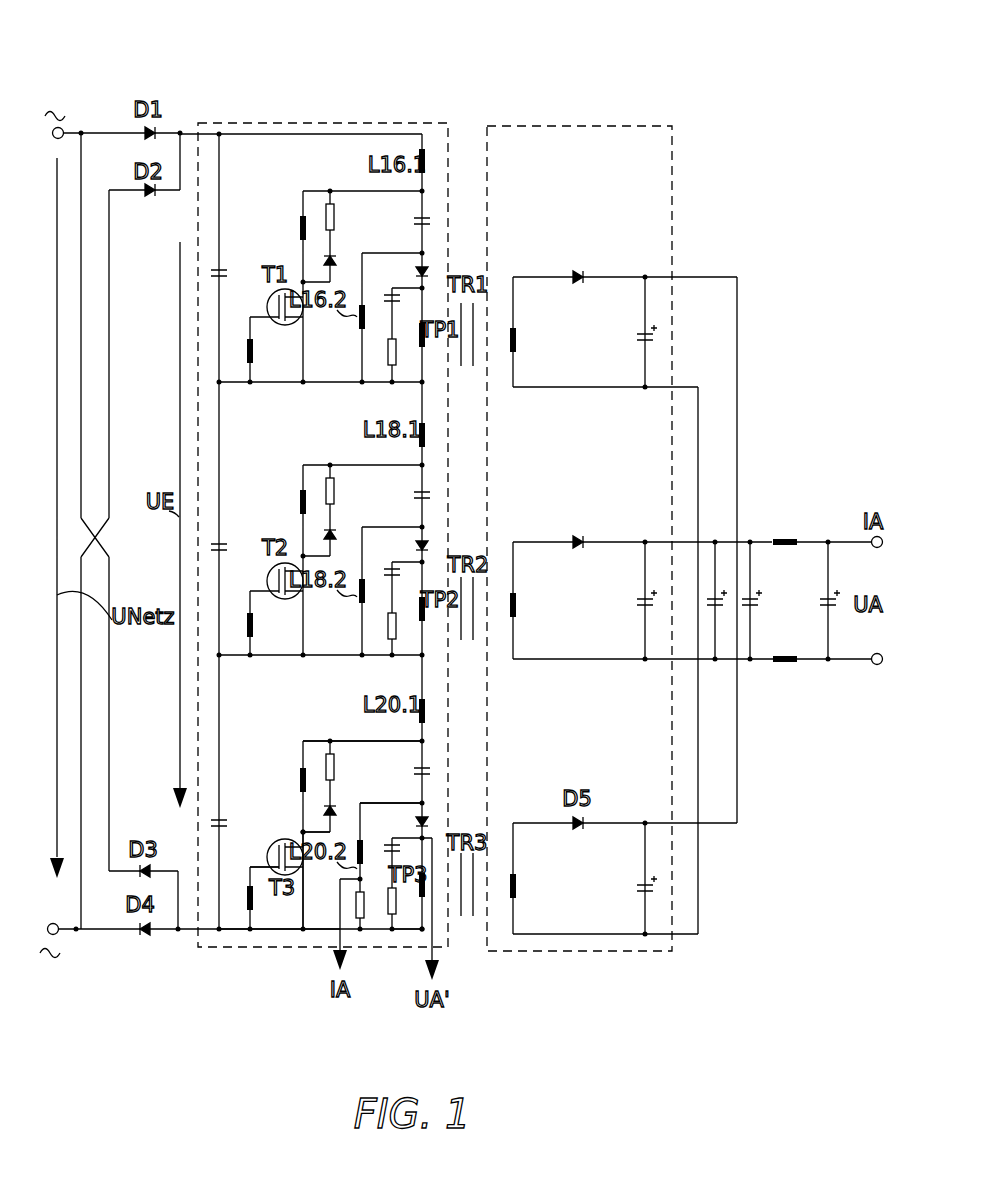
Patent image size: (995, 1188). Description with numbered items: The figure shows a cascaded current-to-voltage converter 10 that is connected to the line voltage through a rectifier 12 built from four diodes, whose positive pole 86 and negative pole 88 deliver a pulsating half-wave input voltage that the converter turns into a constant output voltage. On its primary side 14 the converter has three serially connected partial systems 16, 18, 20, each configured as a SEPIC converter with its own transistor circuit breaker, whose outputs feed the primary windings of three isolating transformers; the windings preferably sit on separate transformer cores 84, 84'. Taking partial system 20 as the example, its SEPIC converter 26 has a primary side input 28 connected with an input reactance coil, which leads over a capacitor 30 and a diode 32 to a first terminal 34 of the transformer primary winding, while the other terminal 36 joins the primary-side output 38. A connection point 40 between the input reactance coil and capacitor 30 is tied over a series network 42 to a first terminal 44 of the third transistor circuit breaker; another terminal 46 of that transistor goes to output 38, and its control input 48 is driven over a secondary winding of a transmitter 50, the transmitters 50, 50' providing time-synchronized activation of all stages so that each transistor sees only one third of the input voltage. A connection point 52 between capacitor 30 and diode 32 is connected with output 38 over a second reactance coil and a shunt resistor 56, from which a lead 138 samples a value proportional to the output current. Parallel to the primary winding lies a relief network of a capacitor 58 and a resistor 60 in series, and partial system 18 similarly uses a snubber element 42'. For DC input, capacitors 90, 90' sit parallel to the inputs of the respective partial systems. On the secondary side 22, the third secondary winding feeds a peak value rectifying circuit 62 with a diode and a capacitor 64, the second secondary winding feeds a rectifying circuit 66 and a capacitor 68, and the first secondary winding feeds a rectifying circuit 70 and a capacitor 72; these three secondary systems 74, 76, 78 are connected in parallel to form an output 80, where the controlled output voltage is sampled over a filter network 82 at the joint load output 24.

The current-to-voltage converter 10 is at (772, 202).
The rectifier 12 is at (109, 148).
The primary side 14 is at (305, 113).
The partial system 16 is at (231, 182).
The partial system 18 is at (233, 427).
The partial system 20 is at (231, 692).
The secondary side 22 is at (563, 116).
The joint load output 24 is at (828, 513).
The SEPIC converter 26 is at (271, 936).
The primary side input 28 is at (216, 936).
The capacitor 30 is at (413, 770).
The diode 32 is at (428, 823).
The first terminal 34 is at (396, 842).
The another terminal 36 is at (418, 935).
The primary-side output 38 is at (305, 936).
The connection point 40 is at (425, 742).
The series network 42 is at (319, 734).
The snubber element 42' is at (320, 458).
The first terminal 44 is at (302, 833).
The another terminal 46 is at (305, 882).
The control input 48 is at (251, 867).
The transmitter 50 is at (263, 898).
The transmitter 50' is at (264, 625).
The connection point 52 is at (425, 803).
The resistor 56 is at (356, 903).
The capacitor 58 is at (412, 843).
The resistor 60 is at (419, 934).
The peak value rectifying circuit 62 is at (552, 937).
The capacitor 64 is at (636, 888).
The rectifying circuit 66 is at (567, 661).
The capacitor 68 is at (632, 595).
The rectifying circuit 70 is at (565, 393).
The capacitor 72 is at (556, 335).
The secondary system 74 is at (687, 258).
The secondary system 76 is at (683, 490).
The secondary system 78 is at (687, 795).
The output 80 is at (747, 664).
The filter network 82 is at (812, 664).
The transformer core 84 is at (488, 925).
The transformer core 84' is at (493, 644).
The positive pole 86 is at (178, 125).
The negative pole 88 is at (176, 936).
The capacitor 90 is at (230, 796).
The capacitor 90' is at (233, 531).
The lead 138 is at (348, 957).